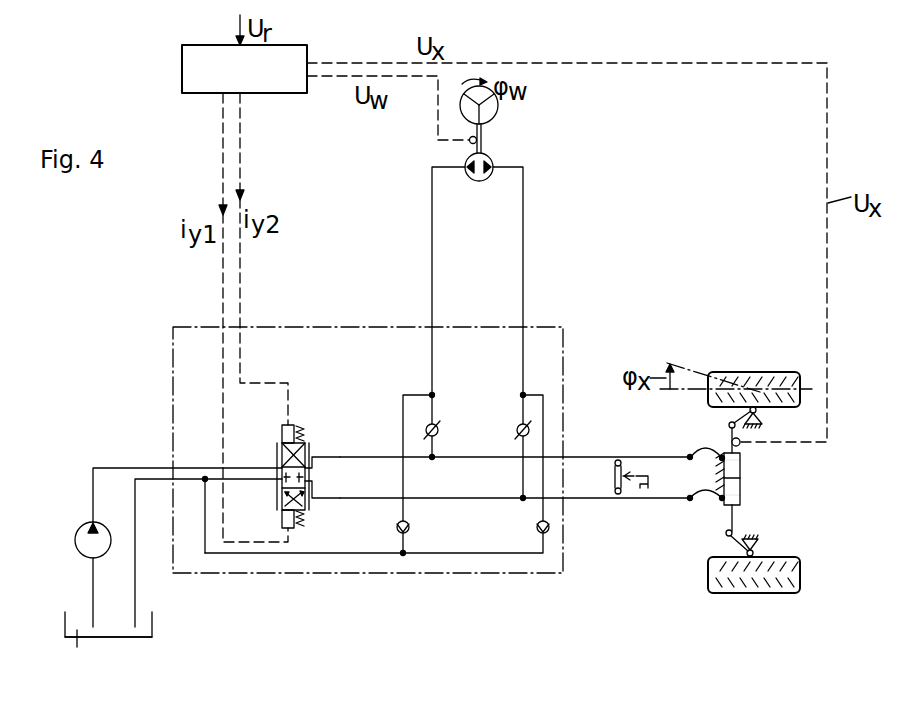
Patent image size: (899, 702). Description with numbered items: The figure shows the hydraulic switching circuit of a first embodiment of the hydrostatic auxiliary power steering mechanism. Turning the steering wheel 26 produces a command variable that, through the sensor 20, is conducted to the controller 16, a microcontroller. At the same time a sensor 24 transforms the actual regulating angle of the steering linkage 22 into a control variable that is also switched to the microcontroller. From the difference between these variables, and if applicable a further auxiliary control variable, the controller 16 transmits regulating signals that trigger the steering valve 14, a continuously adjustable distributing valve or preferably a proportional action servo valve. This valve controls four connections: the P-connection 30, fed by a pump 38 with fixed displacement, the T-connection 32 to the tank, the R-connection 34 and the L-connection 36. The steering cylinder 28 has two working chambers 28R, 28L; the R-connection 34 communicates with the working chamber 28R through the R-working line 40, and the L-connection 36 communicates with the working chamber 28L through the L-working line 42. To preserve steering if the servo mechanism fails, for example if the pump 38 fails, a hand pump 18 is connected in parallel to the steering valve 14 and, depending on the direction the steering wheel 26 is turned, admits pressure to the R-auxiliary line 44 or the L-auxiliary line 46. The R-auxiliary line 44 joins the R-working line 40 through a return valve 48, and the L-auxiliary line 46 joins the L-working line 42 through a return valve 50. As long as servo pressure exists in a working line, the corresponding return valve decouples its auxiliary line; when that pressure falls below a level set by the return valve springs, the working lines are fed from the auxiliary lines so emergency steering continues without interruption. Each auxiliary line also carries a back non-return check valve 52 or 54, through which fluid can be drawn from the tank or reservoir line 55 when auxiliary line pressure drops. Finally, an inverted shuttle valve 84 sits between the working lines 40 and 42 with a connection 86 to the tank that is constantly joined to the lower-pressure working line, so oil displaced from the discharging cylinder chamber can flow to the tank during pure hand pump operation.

The steering valve 14 is at (313, 503).
The controller 16 is at (198, 93).
The hand pump 18 is at (491, 161).
The sensor 20 is at (468, 142).
The steering linkage 22 is at (745, 430).
The sensor 24 is at (740, 444).
The steering wheel 26 is at (497, 106).
The steering cylinder 28 is at (748, 488).
The working chamber 28L is at (720, 453).
The working chamber 28R is at (738, 494).
The P-connection 30 is at (252, 467).
The T-connection 32 is at (260, 480).
The R-connection 34 is at (318, 488).
The L-connection 36 is at (318, 454).
The pump 38 is at (95, 533).
The R-working line 40 is at (484, 499).
The L-working line 42 is at (476, 456).
The R-auxiliary line 44 is at (525, 219).
The L-auxiliary line 46 is at (431, 239).
The return valve 48 is at (530, 427).
The return valve 50 is at (439, 424).
The back non-return check valve 52 is at (549, 534).
The back non-return check valve 54 is at (412, 527).
The tank or reservoir line 55 is at (137, 584).
The inverted shuttle valve 84 is at (612, 482).
The connection 86 is at (630, 473).